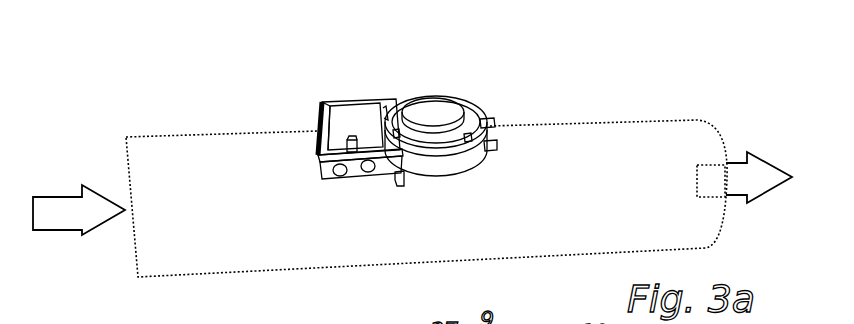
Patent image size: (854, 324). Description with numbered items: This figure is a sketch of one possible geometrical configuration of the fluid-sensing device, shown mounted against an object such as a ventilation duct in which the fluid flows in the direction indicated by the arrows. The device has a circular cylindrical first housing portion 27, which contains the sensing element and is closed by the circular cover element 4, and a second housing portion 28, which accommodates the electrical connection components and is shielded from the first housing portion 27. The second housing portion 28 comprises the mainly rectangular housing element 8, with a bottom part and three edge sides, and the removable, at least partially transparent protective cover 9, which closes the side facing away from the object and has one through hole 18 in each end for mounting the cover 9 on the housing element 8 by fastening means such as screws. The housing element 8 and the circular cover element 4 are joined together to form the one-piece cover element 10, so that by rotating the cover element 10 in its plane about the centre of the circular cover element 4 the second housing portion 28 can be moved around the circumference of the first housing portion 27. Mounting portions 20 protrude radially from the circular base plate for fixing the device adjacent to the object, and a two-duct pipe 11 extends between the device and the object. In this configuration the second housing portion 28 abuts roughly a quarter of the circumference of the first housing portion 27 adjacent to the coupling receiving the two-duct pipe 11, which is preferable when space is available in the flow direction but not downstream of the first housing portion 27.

The circular cover element 4 is at (460, 172).
The housing element 8 is at (318, 156).
The removable protective cover 9 is at (366, 118).
The cover element 10 is at (416, 170).
The two-duct pipe 11 is at (398, 182).
The through hole 18 is at (355, 103).
The mounting portion 20 is at (487, 122).
The first housing portion 27 is at (450, 90).
The second housing portion 28 is at (303, 115).